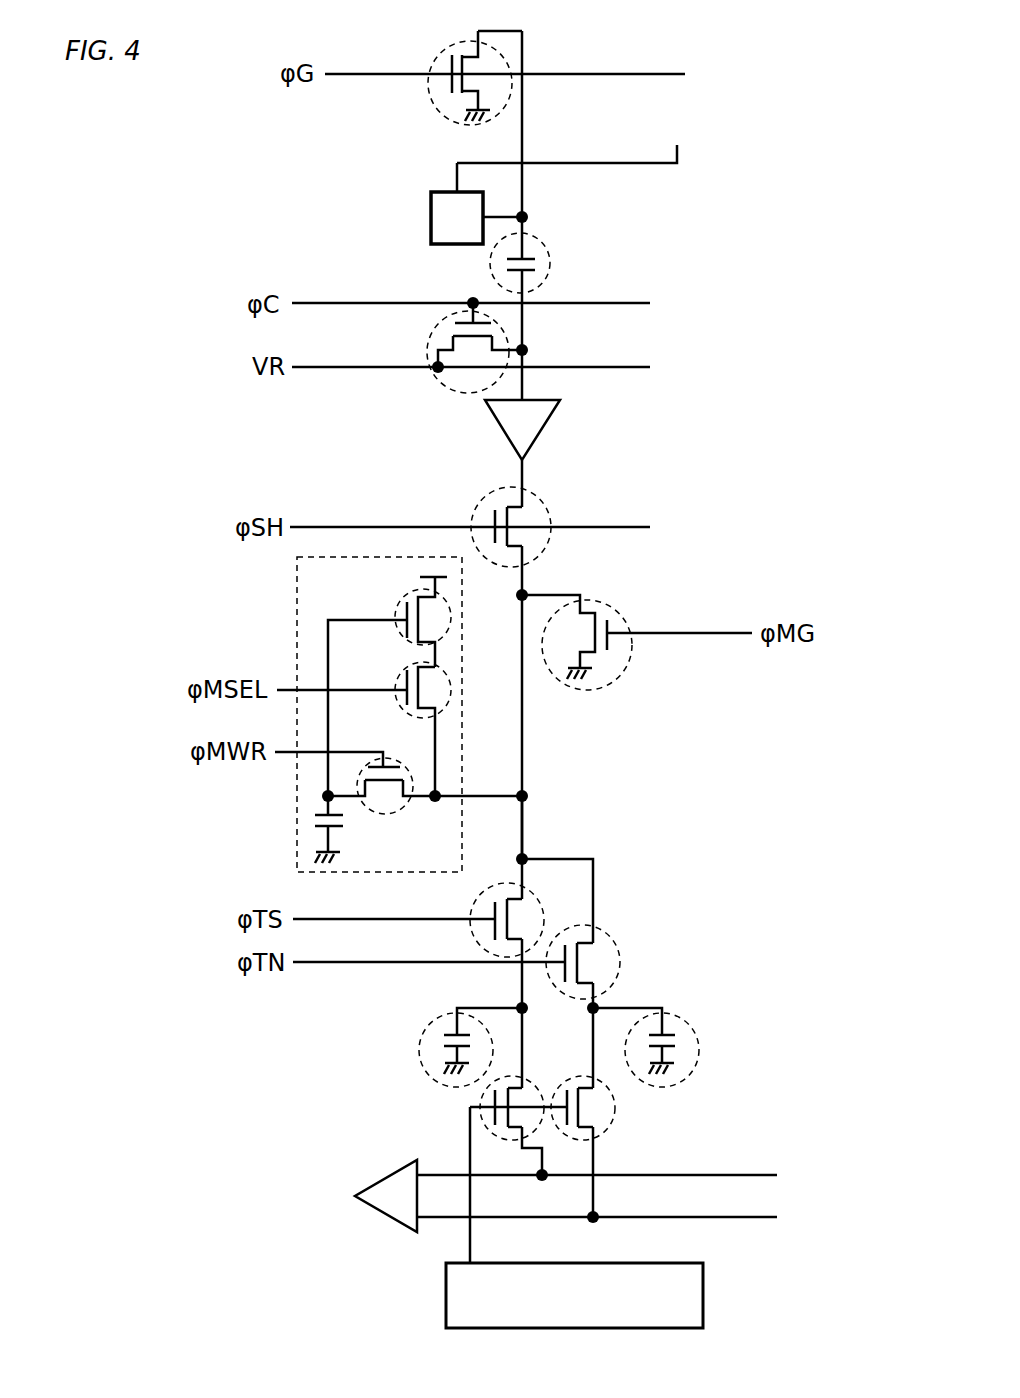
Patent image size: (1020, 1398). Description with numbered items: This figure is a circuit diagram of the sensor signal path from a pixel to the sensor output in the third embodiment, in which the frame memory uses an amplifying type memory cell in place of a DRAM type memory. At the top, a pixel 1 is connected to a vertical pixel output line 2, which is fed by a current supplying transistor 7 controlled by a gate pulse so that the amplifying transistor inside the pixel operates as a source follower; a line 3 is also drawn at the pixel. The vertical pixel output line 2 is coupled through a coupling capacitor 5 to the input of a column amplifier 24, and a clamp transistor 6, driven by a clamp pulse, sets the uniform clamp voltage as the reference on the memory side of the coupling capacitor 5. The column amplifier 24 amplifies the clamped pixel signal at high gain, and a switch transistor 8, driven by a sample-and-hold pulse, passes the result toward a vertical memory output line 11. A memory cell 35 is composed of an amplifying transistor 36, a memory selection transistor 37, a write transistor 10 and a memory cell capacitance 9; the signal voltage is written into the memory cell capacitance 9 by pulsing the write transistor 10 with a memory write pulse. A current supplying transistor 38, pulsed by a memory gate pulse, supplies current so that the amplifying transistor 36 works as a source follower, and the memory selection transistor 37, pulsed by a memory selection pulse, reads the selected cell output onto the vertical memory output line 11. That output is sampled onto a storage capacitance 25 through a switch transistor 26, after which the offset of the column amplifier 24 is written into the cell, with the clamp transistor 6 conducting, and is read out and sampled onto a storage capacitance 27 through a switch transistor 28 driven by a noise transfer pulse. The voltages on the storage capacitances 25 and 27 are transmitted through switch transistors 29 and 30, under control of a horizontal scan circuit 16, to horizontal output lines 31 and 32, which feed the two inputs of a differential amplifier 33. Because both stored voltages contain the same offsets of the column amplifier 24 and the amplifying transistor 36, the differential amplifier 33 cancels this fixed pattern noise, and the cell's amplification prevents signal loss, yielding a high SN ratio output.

The pixel 1 is at (431, 220).
The vertical pixel output line 2 is at (524, 126).
The line 3 is at (677, 145).
The coupling capacitor 5 is at (543, 246).
The clamp transistor 6 is at (428, 328).
The current supplying transistor 7 is at (454, 50).
The switch transistor 8 is at (478, 500).
The memory cell capacitance 9 is at (312, 828).
The write transistor 10 is at (404, 806).
The vertical memory output line 11 is at (524, 828).
The horizontal scan circuit 16 is at (704, 1292).
The column amplifier 24 is at (546, 426).
The storage capacitance 25 is at (426, 1020).
The switch transistor 26 is at (472, 904).
The storage capacitance 27 is at (696, 1024).
The switch transistor 28 is at (612, 937).
The switch transistor 29 is at (470, 1102).
The switch transistor 30 is at (612, 1110).
The horizontal output line 31 is at (735, 1175).
The horizontal output line 32 is at (735, 1217).
The differential amplifier 33 is at (378, 1214).
The memory cell 35 is at (297, 598).
The amplifying transistor 36 is at (395, 600).
The memory selection transistor 37 is at (395, 678).
The current supplying transistor 38 is at (616, 613).